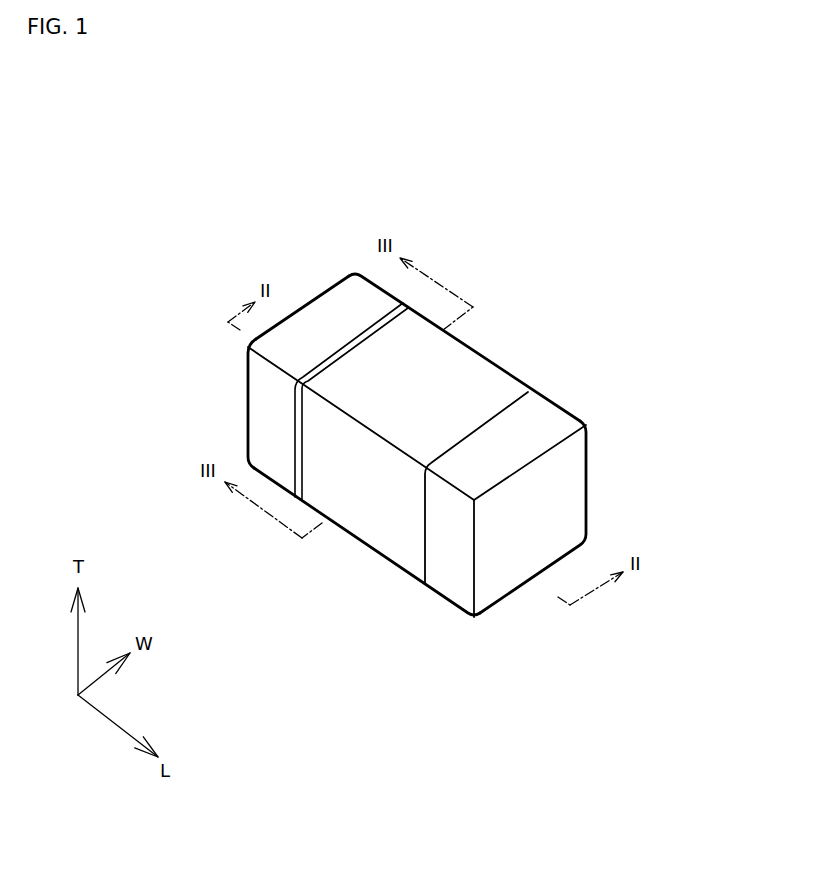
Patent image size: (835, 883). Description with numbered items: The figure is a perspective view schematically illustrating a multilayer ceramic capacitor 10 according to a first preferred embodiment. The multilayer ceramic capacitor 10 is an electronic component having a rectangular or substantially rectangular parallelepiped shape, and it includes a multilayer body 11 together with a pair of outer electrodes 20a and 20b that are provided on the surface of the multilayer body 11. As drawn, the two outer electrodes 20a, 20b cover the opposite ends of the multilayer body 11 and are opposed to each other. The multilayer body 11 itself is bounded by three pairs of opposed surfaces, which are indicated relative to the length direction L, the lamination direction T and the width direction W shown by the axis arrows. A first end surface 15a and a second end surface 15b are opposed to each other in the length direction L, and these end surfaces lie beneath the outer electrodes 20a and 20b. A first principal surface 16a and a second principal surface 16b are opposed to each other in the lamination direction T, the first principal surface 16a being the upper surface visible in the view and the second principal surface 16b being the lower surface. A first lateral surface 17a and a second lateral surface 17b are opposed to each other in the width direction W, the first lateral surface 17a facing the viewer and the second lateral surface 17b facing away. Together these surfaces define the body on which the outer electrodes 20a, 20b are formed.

The multilayer ceramic capacitor 10 is at (565, 280).
The multilayer body 11 is at (453, 360).
The first end surface 15a is at (272, 403).
The second end surface 15b is at (484, 554).
The first principal surface 16a is at (490, 383).
The second principal surface 16b is at (405, 552).
The first lateral surface 17a is at (368, 512).
The second lateral surface 17b is at (502, 394).
The first outer electrode 20a is at (333, 303).
The second outer electrode 20b is at (553, 412).